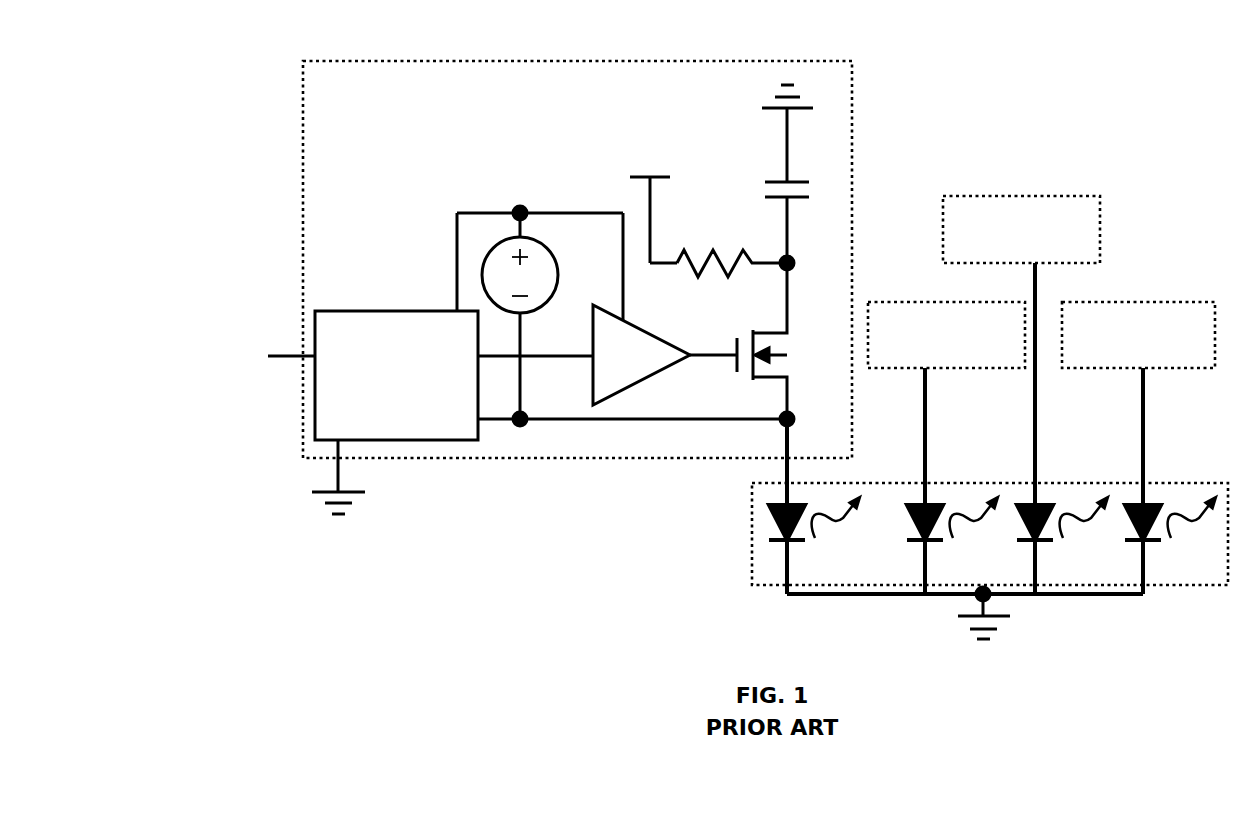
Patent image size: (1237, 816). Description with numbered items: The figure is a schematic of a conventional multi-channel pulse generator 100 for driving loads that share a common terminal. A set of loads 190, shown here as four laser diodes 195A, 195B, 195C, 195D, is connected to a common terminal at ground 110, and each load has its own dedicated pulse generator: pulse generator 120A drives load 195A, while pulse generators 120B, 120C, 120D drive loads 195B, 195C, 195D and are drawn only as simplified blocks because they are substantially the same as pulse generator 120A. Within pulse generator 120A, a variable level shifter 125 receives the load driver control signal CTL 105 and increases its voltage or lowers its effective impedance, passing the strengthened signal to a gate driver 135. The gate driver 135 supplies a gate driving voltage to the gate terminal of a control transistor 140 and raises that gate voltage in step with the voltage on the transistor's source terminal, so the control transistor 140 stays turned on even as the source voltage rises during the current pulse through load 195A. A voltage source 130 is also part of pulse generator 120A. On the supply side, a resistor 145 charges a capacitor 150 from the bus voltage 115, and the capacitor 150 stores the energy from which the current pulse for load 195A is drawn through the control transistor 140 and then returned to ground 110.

The multi-channel pulse generator 100 is at (1106, 117).
The load driver control signal CTL 105 is at (243, 356).
The ground 110 is at (681, 364).
The bus voltage VBUS 115 is at (638, 202).
The pulse generator 120A is at (855, 134).
The pulse generator 120B is at (918, 298).
The pulse generator 120C is at (980, 196).
The pulse generator 120D is at (1115, 300).
The variable level shifter 125 is at (398, 308).
The voltage source 130 is at (544, 316).
The gate driver 135 is at (665, 355).
The control transistor 140 is at (788, 341).
The resistor 145 is at (732, 248).
The capacitor 150 is at (762, 185).
The set of loads 190 is at (750, 505).
The load 195A is at (814, 506).
The load 195B is at (952, 481).
The load 195C is at (1062, 428).
The load 195D is at (1170, 481).